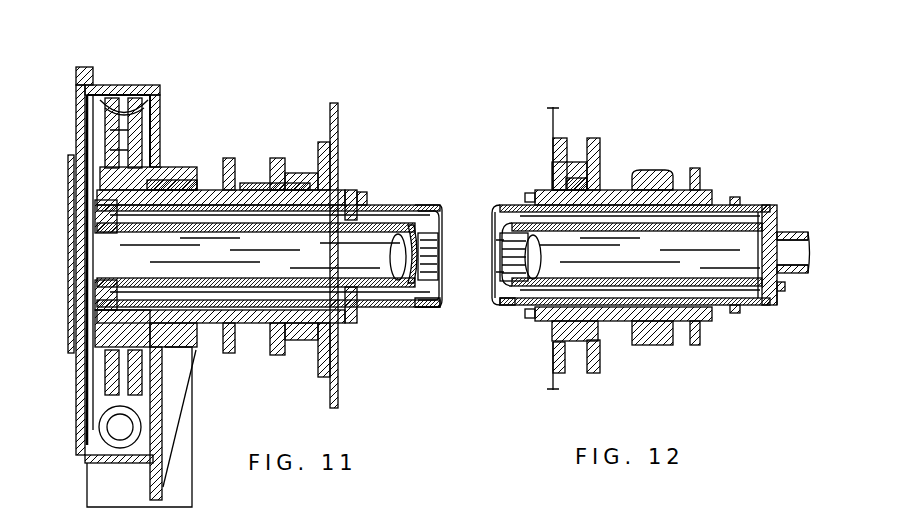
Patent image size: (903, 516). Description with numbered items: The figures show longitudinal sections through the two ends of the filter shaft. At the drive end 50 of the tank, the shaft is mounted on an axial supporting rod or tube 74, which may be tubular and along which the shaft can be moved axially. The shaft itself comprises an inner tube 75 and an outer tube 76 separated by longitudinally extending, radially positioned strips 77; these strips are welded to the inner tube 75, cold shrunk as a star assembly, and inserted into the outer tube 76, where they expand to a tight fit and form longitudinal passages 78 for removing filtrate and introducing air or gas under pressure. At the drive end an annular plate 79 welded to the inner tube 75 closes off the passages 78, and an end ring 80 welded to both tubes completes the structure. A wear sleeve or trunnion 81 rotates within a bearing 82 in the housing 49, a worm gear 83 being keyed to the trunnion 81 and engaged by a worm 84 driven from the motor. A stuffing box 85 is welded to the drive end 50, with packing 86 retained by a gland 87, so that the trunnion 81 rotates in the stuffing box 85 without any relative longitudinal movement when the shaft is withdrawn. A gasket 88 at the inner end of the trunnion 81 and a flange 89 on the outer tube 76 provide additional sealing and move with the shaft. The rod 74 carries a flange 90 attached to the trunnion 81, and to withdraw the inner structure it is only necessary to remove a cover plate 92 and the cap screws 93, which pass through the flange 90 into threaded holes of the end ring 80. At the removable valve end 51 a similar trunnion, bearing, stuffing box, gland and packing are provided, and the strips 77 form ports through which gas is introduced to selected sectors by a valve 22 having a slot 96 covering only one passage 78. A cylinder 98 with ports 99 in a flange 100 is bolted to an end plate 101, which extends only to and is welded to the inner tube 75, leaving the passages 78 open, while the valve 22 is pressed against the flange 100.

In FIG. 12, the valve 22 is at (778, 306).
In FIG. 11, the housing 49 is at (162, 93).
In FIG. 11, the drive end 50 is at (339, 105).
In FIG. 12, the valve end 51 is at (552, 150).
In FIG. 11, the tube 74 is at (395, 210).
In FIG. 12, the tube 74 is at (664, 258).
In FIG. 11, the inner tube 75 is at (387, 284).
In FIG. 12, the inner tube 75 is at (560, 283).
In FIG. 11, the outer tube 76 is at (506, 303).
In FIG. 12, the outer tube 76 is at (507, 301).
In FIG. 11, the strips 77 is at (428, 256).
In FIG. 12, the strips 77 is at (500, 216).
In FIG. 11, the longitudinal passages 78 is at (500, 254).
In FIG. 12, the longitudinal passages 78 is at (512, 257).
In FIG. 11, the annular plate 79 is at (357, 306).
In FIG. 11, the end ring 80 is at (118, 228).
In FIG. 11, the wear sleeve or trunnion 81 is at (211, 190).
In FIG. 12, the wear sleeve or trunnion 81 is at (611, 190).
In FIG. 11, the bearing 82 is at (178, 168).
In FIG. 12, the bearing 82 is at (666, 171).
In FIG. 11, the worm gear 83 is at (118, 104).
In FIG. 11, the worm 84 is at (129, 446).
In FIG. 11, the stuffing box 85 is at (277, 158).
In FIG. 12, the stuffing box 85 is at (565, 140).
In FIG. 11, the packing 86 is at (300, 175).
In FIG. 12, the packing 86 is at (575, 345).
In FIG. 11, the gland 87 is at (233, 158).
In FIG. 12, the gland 87 is at (600, 140).
In FIG. 11, the gasket 88 is at (352, 192).
In FIG. 11, the flange 89 is at (363, 200).
In FIG. 11, the flange 90 is at (86, 215).
In FIG. 11, the cover plate 92 is at (72, 276).
In FIG. 11, the cap screws 93 is at (86, 305).
In FIG. 12, the slot 96 is at (783, 292).
In FIG. 12, the cylinder 98 is at (792, 274).
In FIG. 12, the ports 99 is at (776, 221).
In FIG. 12, the flange 100 is at (771, 207).
In FIG. 12, the end plate 101 is at (760, 258).